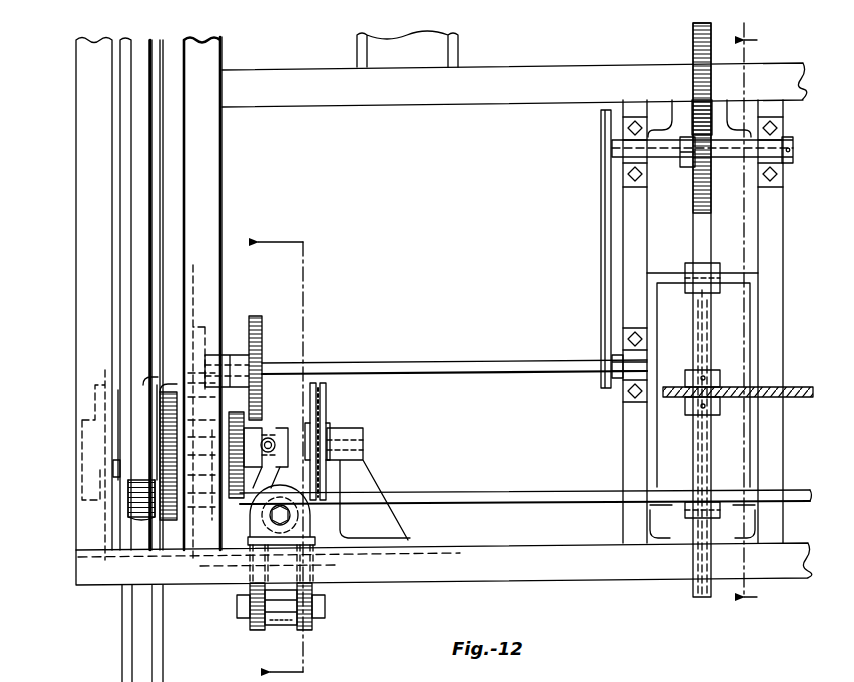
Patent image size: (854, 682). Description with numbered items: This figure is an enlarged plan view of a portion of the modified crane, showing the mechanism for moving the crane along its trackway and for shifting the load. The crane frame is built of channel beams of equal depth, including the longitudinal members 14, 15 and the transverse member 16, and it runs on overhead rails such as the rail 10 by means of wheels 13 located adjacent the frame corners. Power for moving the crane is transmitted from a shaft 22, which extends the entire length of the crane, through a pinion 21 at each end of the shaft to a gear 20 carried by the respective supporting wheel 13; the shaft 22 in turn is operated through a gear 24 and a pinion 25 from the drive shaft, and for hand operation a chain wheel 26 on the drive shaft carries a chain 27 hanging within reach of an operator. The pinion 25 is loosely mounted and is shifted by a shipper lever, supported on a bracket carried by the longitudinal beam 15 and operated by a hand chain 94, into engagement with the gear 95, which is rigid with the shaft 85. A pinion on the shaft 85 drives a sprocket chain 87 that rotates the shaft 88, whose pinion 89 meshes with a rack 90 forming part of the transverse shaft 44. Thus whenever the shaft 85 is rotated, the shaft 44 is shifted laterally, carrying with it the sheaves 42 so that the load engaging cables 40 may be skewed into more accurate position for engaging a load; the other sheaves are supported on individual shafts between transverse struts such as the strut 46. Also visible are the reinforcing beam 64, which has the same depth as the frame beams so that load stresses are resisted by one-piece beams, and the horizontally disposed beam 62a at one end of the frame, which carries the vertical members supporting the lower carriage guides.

The overhead rail 10 is at (130, 645).
The wheel 13 is at (70, 355).
The longitudinal member 14 is at (736, 322).
The longitudinal member 15 is at (540, 543).
The transverse member 16 is at (78, 195).
The gear 20 is at (173, 392).
The pinion 21 is at (175, 522).
The shaft 22 is at (480, 478).
The gear 24 is at (235, 540).
The pinion 25 is at (246, 432).
The chain wheel 26 is at (326, 385).
The chain 27 is at (330, 403).
The hoisting cable 40 is at (790, 387).
The sheave 42 is at (690, 415).
The transverse shaft 44 is at (693, 40).
The transverse strut 46 is at (623, 438).
The horizontally disposed beam 62a is at (444, 50).
The reinforcing beam 64 is at (512, 92).
The shaft 85 is at (447, 350).
The sprocket chain 87 is at (601, 247).
The shaft 88 is at (667, 158).
The pinion 89 is at (712, 170).
The rack 90 is at (693, 115).
The hand chain 94 is at (290, 628).
The gear 95 is at (262, 316).